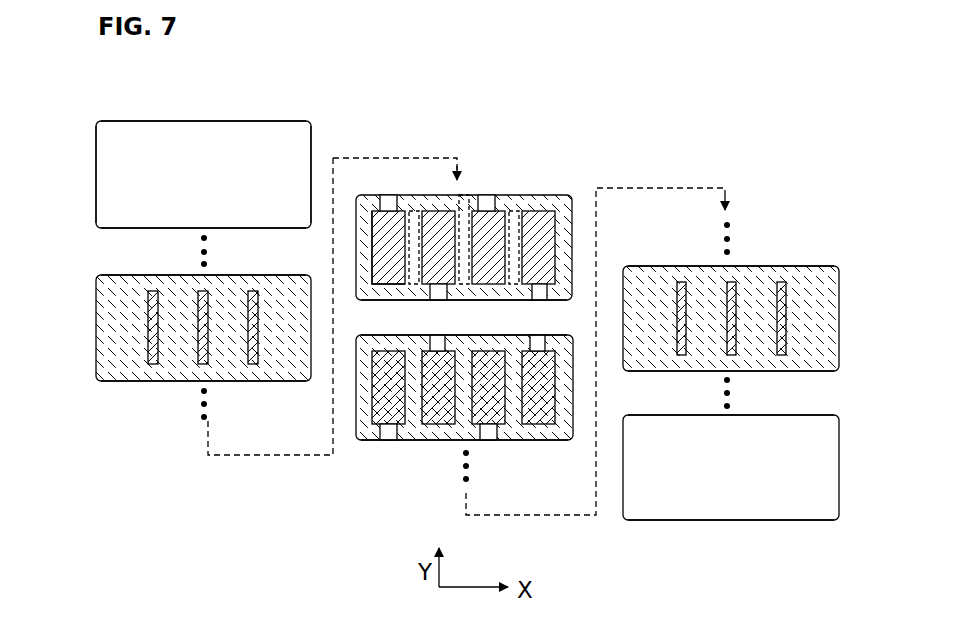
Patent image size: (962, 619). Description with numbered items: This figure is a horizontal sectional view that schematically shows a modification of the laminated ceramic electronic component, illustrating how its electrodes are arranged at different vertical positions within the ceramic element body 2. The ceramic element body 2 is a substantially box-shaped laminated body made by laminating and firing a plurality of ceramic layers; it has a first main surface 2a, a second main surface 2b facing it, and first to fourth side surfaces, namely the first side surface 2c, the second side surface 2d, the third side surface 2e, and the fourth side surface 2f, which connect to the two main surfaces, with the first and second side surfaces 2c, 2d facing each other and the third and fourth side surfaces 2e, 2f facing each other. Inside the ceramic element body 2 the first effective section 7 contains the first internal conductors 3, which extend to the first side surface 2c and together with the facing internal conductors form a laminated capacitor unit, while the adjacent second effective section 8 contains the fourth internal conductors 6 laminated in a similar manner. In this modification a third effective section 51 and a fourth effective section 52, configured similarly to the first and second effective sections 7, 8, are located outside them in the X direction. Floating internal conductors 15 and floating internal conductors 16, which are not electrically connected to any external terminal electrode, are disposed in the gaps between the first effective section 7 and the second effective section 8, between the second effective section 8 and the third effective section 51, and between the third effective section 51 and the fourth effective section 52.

The ceramic element body 2 is at (96, 171).
The first main surface 2a is at (200, 138).
The second main surface 2b is at (830, 432).
The first side surface 2c is at (213, 121).
The second side surface 2d is at (219, 229).
The third side surface 2e is at (96, 150).
The fourth side surface 2f is at (311, 145).
The first internal conductor 3 is at (372, 268).
The fourth internal conductor 6 is at (420, 283).
The first effective section 7 is at (370, 238).
The second effective section 8 is at (457, 205).
The floating internal conductor 15 is at (153, 366).
The floating internal conductor 16 is at (680, 356).
The third effective section 51 is at (503, 207).
The fourth effective section 52 is at (550, 207).